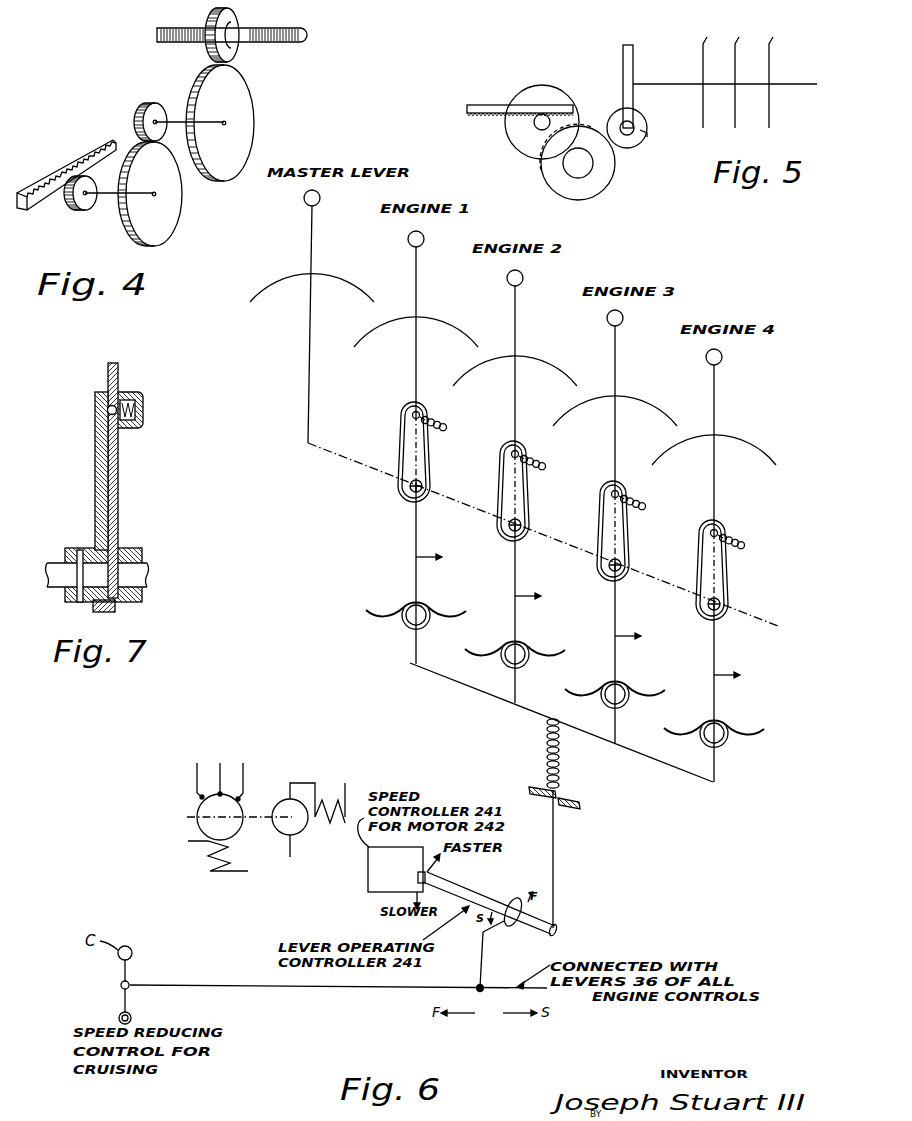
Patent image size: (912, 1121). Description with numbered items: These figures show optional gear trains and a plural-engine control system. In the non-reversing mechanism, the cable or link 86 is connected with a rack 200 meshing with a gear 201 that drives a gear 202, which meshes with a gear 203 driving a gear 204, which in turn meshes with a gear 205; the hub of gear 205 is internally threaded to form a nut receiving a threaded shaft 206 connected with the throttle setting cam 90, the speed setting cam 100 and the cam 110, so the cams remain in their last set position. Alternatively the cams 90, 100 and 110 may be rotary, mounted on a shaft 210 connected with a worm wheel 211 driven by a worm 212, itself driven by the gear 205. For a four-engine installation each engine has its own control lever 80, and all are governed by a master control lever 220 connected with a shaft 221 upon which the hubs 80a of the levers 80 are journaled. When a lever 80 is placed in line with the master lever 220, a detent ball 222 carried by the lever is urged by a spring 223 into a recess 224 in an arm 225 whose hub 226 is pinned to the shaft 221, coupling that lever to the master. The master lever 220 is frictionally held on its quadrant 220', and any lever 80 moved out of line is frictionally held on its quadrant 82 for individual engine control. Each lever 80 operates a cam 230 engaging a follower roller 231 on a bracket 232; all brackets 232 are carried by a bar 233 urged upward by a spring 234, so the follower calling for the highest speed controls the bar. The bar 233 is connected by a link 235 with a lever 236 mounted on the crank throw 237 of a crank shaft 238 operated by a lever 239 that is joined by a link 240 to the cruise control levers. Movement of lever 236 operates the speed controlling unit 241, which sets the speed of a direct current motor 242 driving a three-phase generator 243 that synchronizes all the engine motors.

In FIG. 4, the rack 200 is at (57, 175).
In FIG. 5, the rack 200 is at (490, 105).
In FIG. 4, the gear 201 is at (80, 216).
In FIG. 5, the gear 201 is at (534, 123).
In FIG. 4, the gear 202 is at (182, 206).
In FIG. 5, the gear 202 is at (517, 148).
In FIG. 4, the gear 203 is at (141, 110).
In FIG. 5, the gear 203 is at (560, 163).
In FIG. 4, the gear 204 is at (258, 101).
In FIG. 5, the gear 204 is at (616, 163).
In FIG. 4, the gear 205 is at (236, 21).
In FIG. 5, the gear 205 is at (647, 113).
In FIG. 4, the threaded shaft 206 is at (289, 28).
In FIG. 5, the shaft 210 is at (803, 86).
In FIG. 5, the worm wheel 211 is at (634, 63).
In FIG. 5, the worm 212 is at (647, 135).
In FIG. 5, the throttle setting cam 90 is at (703, 74).
In FIG. 5, the speed setting cam 100 is at (747, 74).
In FIG. 5, the cam 110 is at (785, 74).
In FIG. 7, the control lever 80 is at (119, 487).
In FIG. 6, the control lever 80 is at (419, 286).
In FIG. 7, the hub 80a is at (121, 566).
In FIG. 6, the quadrant 82 is at (463, 332).
In FIG. 6, the link 86 is at (587, 615).
In FIG. 6, the master control lever 220 is at (328, 316).
In FIG. 6, the quadrant 220' is at (303, 286).
In FIG. 7, the shaft 221 is at (150, 572).
In FIG. 6, the shaft 221 is at (361, 470).
In FIG. 7, the detent ball 222 is at (122, 398).
In FIG. 6, the detent ball 222 is at (428, 410).
In FIG. 7, the spring 223 is at (143, 409).
In FIG. 6, the spring 223 is at (447, 431).
In FIG. 7, the recess 224 is at (107, 410).
In FIG. 7, the arm 225 is at (95, 459).
In FIG. 6, the arm 225 is at (400, 442).
In FIG. 7, the hub 226 is at (78, 600).
In FIG. 6, the cam 230 is at (362, 608).
In FIG. 6, the follower roller 231 is at (403, 621).
In FIG. 6, the bracket 232 is at (423, 628).
In FIG. 6, the bar 233 is at (455, 685).
In FIG. 6, the spring 234 is at (566, 768).
In FIG. 6, the link 235 is at (557, 846).
In FIG. 6, the lever 236 is at (468, 888).
In FIG. 6, the crank throw 237 is at (508, 897).
In FIG. 6, the crank shaft 238 is at (485, 938).
In FIG. 6, the lever 239 is at (482, 963).
In FIG. 6, the link 240 is at (532, 990).
In FIG. 6, the speed controlling unit 241 is at (366, 878).
In FIG. 6, the direct current motor 242 is at (266, 820).
In FIG. 6, the three-phase generator 243 is at (196, 819).